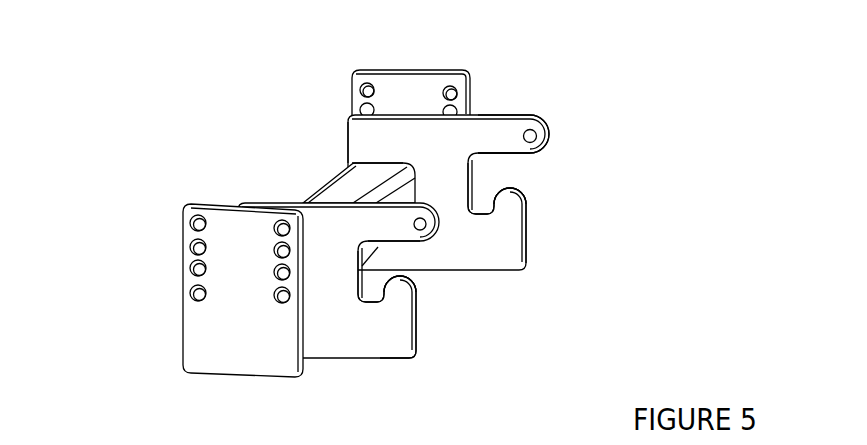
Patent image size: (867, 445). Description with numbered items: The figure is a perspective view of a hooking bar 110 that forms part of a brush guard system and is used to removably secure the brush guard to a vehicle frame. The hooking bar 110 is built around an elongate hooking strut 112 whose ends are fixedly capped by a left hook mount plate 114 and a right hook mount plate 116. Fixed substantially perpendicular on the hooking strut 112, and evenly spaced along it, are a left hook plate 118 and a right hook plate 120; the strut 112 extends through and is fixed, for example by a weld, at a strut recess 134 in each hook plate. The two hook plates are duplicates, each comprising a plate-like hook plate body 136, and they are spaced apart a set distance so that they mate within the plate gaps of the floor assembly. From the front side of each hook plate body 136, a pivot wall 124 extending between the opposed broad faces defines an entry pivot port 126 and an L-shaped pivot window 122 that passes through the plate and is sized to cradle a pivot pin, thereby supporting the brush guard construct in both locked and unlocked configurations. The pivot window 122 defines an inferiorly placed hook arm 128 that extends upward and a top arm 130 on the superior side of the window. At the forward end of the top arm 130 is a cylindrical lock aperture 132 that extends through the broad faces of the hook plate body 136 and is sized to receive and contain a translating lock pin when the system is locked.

The hooking bar 110 is at (252, 142).
The elongate hooking strut 112 is at (332, 175).
The left hook mount plate 114 is at (385, 67).
The right hook mount plate 116 is at (178, 330).
The left hook plate 118 is at (539, 267).
The right hook plate 120 is at (414, 362).
The pivot window 122 is at (486, 178).
The pivot wall 124 is at (476, 216).
The entry pivot port 126 is at (541, 173).
The hook arm 128 is at (508, 202).
The top arm 130 is at (497, 127).
The lock aperture 132 is at (540, 131).
The strut recess 134 is at (377, 162).
The hook plate body 136 is at (394, 362).